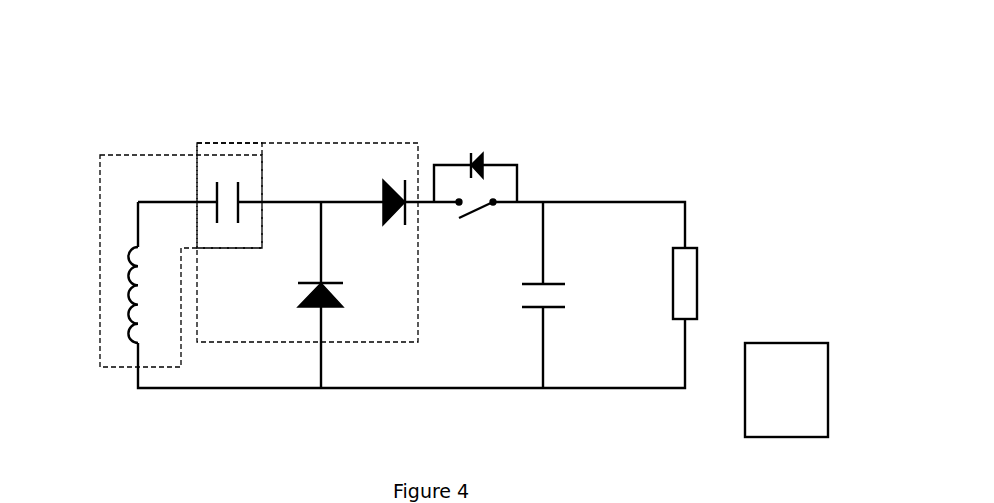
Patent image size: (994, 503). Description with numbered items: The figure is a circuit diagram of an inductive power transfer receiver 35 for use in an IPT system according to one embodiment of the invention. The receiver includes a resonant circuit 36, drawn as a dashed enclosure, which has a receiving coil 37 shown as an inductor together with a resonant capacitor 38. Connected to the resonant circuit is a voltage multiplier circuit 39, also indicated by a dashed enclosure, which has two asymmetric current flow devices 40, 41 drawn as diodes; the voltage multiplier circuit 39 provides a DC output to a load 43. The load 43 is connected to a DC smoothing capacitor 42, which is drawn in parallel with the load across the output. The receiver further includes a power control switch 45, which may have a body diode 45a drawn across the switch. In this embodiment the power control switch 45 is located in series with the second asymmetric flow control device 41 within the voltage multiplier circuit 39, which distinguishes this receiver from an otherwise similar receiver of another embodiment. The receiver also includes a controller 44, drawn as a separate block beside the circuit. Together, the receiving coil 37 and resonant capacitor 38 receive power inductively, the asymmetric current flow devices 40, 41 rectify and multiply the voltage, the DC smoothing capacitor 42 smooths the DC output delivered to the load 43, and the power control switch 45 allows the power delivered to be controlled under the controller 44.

The inductive power transfer receiver 35 is at (676, 57).
The resonant circuit 36 is at (115, 155).
The receiving coil 37 is at (128, 297).
The resonant capacitor 38 is at (240, 182).
The voltage multiplier circuit 39 is at (275, 142).
The asymmetric current flow device 40 is at (321, 283).
The second asymmetric flow control device 41 is at (387, 180).
The body diode 45a is at (478, 155).
The power control switch 45 is at (493, 203).
The DC smoothing capacitor 42 is at (549, 283).
The load 43 is at (699, 278).
The controller 44 is at (794, 343).